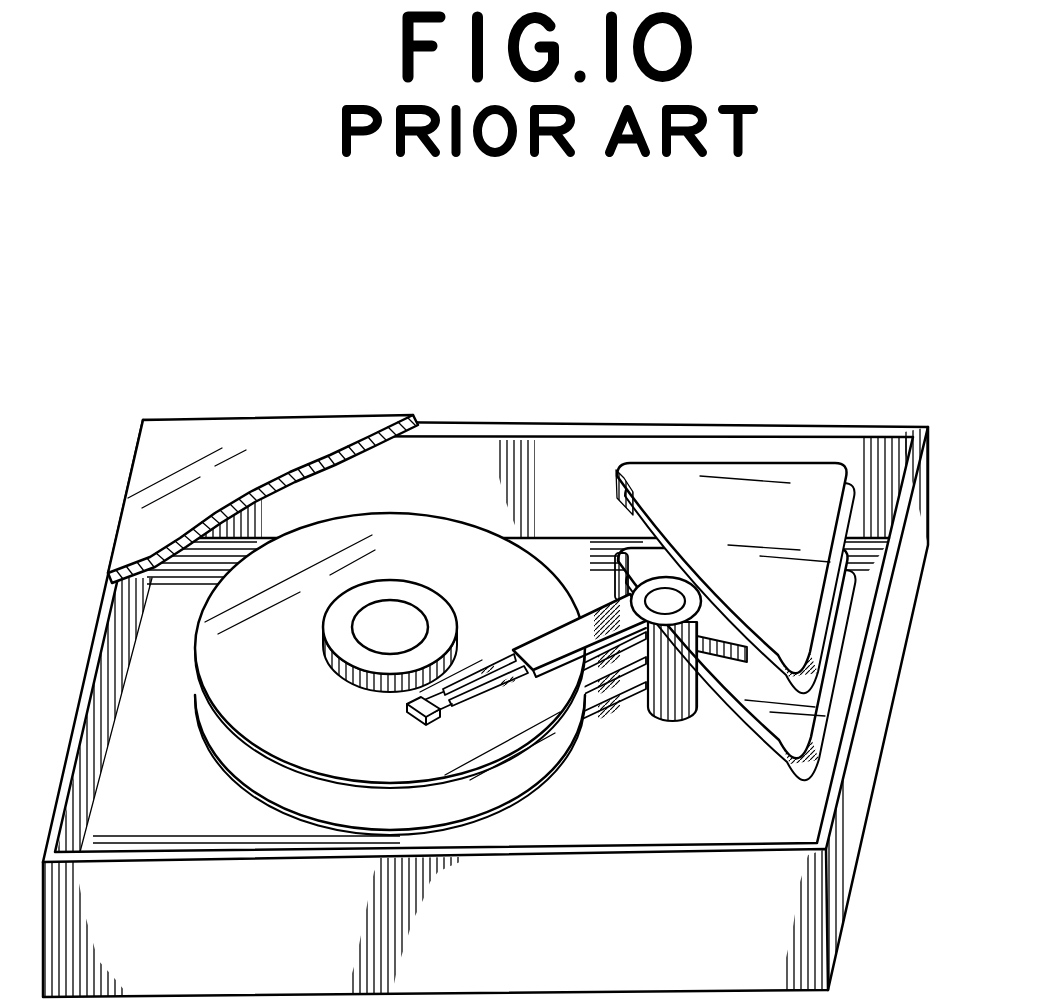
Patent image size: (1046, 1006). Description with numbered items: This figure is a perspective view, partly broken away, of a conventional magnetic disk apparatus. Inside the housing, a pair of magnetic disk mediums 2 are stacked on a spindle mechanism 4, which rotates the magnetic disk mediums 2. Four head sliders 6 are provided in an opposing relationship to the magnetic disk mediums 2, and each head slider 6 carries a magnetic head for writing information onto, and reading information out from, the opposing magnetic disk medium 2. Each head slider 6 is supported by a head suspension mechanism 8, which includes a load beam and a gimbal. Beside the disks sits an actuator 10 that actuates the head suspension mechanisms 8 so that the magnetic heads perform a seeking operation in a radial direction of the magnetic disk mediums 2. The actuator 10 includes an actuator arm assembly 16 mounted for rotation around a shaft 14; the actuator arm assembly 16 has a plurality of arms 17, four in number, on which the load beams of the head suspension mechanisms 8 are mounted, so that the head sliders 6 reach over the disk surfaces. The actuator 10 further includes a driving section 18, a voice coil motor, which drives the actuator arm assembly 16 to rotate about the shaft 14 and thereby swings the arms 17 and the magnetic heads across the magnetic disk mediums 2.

The magnetic disk medium 2 is at (308, 538).
The spindle mechanism 4 is at (413, 588).
The head slider 6 is at (405, 712).
The head suspension mechanism 8 is at (497, 670).
The actuator 10 is at (676, 476).
The shaft 14 is at (672, 600).
The actuator arm assembly 16 is at (654, 719).
The arm 17 is at (561, 636).
The driving section 18 is at (846, 476).